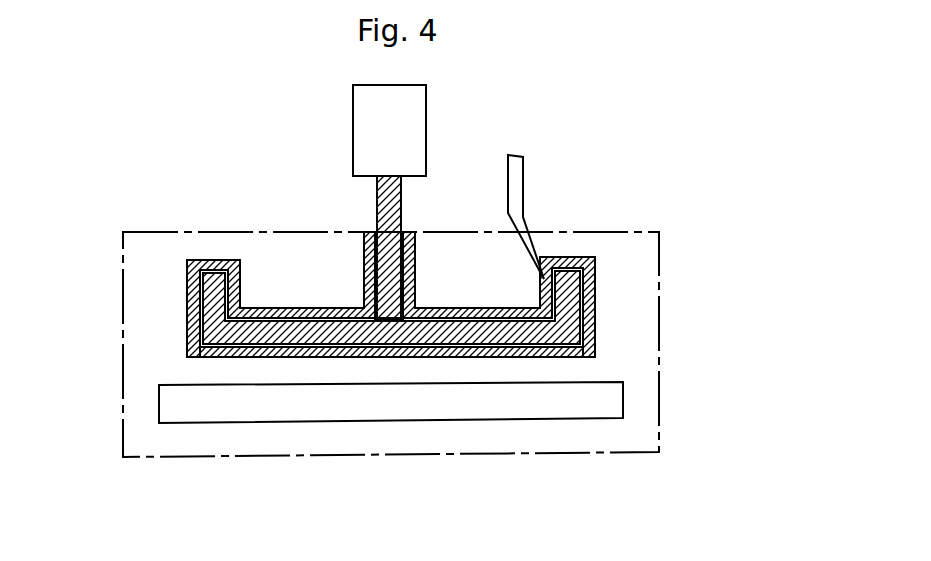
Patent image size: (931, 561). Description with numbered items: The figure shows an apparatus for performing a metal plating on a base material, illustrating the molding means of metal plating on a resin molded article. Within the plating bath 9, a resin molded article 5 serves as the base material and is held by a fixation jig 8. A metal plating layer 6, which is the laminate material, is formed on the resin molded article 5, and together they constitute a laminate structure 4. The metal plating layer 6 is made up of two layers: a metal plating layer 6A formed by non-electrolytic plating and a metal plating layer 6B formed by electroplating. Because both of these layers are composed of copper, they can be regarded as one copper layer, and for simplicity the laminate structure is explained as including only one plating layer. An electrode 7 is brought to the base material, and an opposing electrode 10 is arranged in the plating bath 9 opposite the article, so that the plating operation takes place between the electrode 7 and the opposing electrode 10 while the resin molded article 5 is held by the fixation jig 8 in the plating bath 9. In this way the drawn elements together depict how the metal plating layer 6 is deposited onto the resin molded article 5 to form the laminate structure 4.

The laminate structure 4 is at (445, 261).
The resin molded article 5 is at (593, 264).
The metal plating layer 6 is at (507, 289).
The metal plating layer 6A is at (593, 282).
The metal plating layer 6B is at (593, 338).
The electrode 7 is at (523, 183).
The fixation jig 8 is at (360, 119).
The plating bath 9 is at (659, 373).
The opposing electrode 10 is at (540, 407).